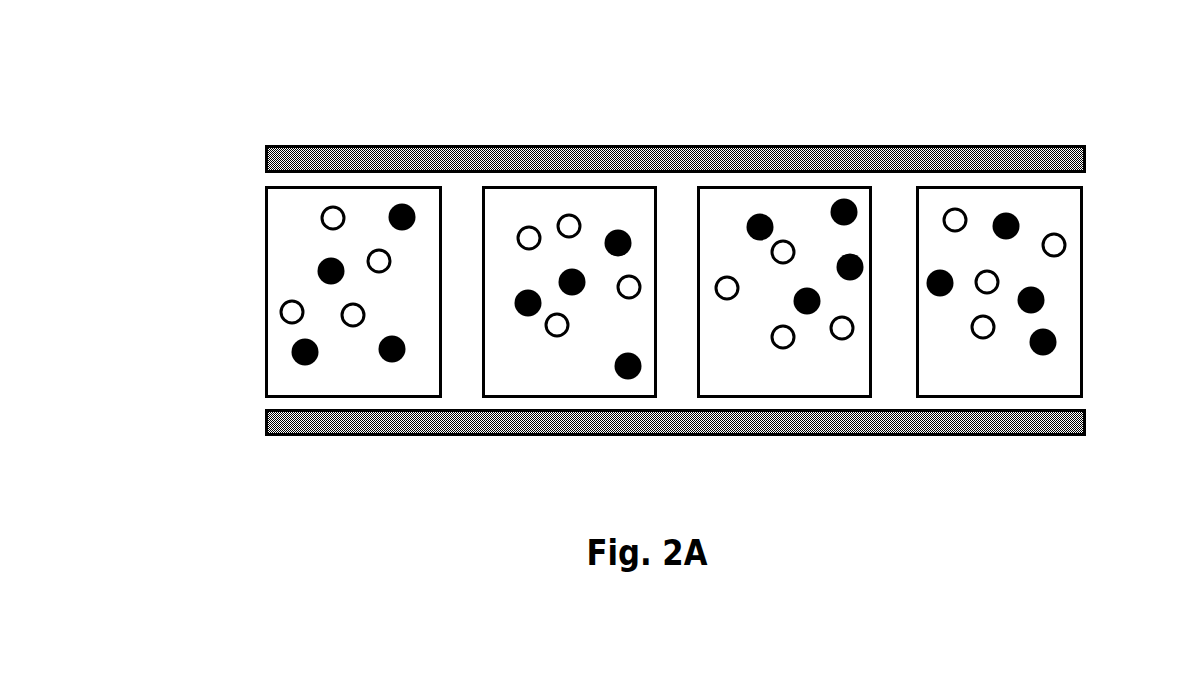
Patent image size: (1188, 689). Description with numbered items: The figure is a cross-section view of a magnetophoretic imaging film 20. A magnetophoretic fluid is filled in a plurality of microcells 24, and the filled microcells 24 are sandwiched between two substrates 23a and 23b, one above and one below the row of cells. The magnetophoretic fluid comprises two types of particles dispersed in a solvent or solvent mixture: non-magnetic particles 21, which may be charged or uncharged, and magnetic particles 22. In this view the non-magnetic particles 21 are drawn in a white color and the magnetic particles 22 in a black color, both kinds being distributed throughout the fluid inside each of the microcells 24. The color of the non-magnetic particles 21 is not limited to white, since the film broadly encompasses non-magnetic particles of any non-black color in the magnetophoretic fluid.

The magnetophoretic imaging film 20 is at (275, 71).
The non-magnetic particles 21 is at (270, 320).
The magnetic particles 22 is at (307, 275).
The substrate 23a is at (506, 149).
The substrate 23b is at (445, 433).
The microcells 24 is at (1096, 331).